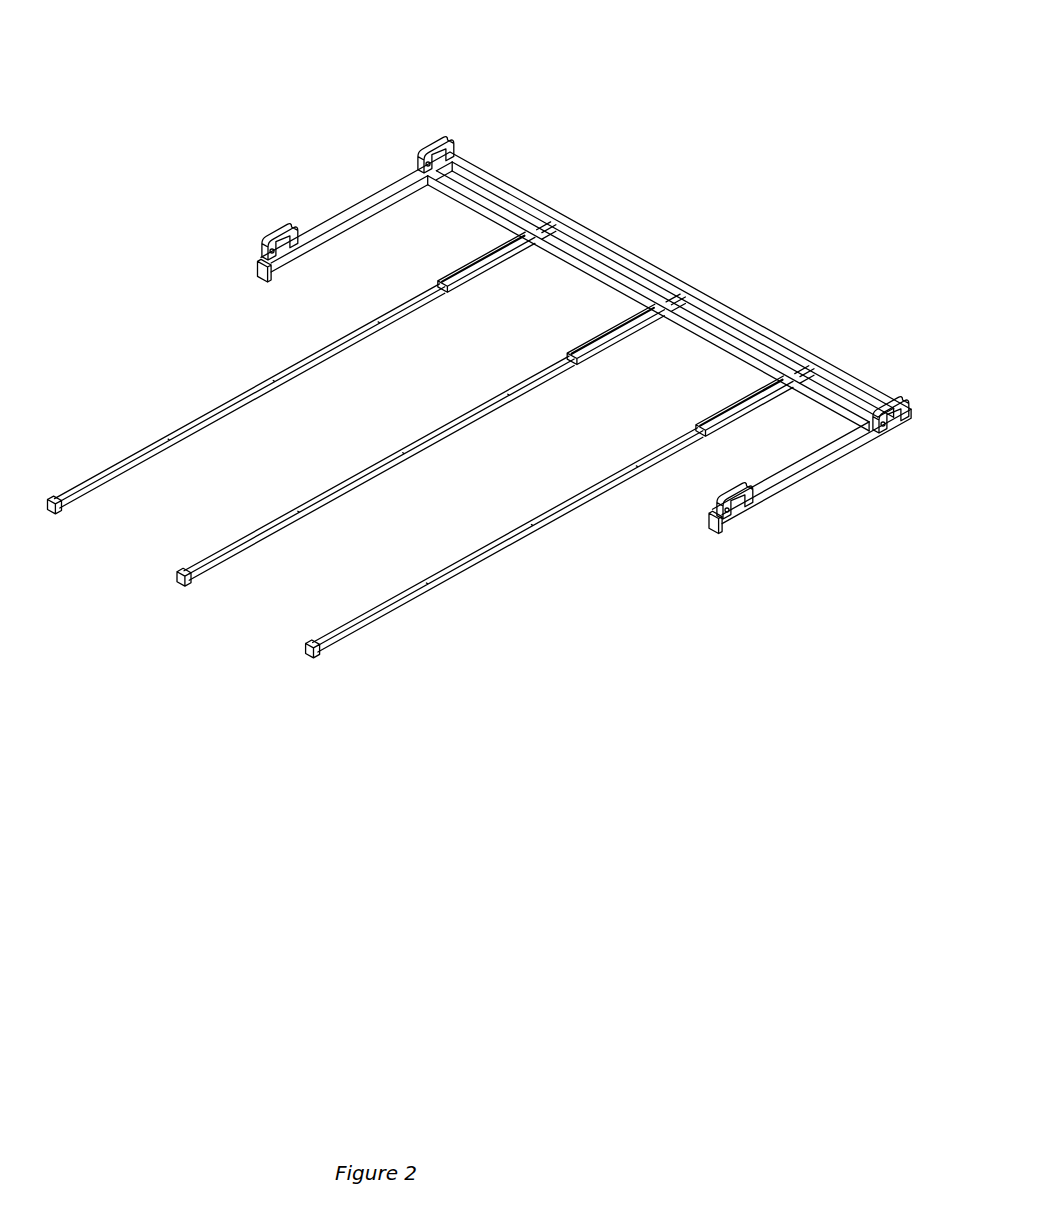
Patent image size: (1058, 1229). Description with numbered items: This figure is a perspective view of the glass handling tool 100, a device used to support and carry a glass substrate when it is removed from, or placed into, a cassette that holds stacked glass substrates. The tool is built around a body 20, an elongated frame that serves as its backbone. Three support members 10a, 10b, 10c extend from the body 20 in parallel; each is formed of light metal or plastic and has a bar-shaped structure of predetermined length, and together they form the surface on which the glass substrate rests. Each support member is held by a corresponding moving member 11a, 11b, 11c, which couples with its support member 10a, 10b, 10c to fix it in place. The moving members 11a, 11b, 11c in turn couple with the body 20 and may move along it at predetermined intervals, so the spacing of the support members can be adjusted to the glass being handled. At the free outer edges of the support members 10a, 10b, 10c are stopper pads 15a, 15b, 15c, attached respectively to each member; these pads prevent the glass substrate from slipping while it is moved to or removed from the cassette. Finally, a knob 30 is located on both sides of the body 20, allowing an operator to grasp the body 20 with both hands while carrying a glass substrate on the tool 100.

The glass handling tool 100 is at (146, 238).
The body 20 is at (617, 245).
The knob 30 is at (432, 146).
The support member 10a is at (456, 574).
The support member 10b is at (327, 503).
The support member 10c is at (210, 425).
The moving member 11a is at (729, 425).
The moving member 11b is at (600, 350).
The moving member 11c is at (485, 267).
The stopper pad 15a is at (312, 660).
The stopper pad 15b is at (184, 588).
The stopper pad 15c is at (60, 515).